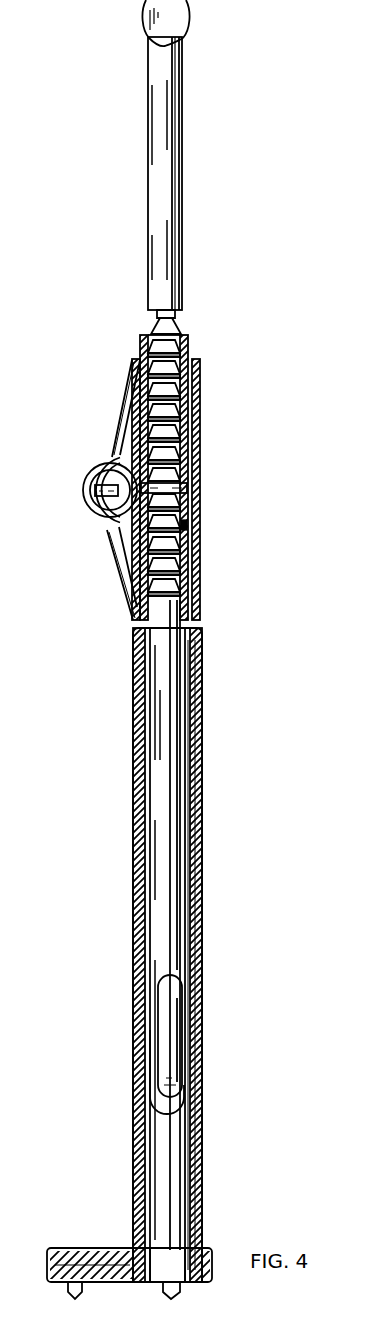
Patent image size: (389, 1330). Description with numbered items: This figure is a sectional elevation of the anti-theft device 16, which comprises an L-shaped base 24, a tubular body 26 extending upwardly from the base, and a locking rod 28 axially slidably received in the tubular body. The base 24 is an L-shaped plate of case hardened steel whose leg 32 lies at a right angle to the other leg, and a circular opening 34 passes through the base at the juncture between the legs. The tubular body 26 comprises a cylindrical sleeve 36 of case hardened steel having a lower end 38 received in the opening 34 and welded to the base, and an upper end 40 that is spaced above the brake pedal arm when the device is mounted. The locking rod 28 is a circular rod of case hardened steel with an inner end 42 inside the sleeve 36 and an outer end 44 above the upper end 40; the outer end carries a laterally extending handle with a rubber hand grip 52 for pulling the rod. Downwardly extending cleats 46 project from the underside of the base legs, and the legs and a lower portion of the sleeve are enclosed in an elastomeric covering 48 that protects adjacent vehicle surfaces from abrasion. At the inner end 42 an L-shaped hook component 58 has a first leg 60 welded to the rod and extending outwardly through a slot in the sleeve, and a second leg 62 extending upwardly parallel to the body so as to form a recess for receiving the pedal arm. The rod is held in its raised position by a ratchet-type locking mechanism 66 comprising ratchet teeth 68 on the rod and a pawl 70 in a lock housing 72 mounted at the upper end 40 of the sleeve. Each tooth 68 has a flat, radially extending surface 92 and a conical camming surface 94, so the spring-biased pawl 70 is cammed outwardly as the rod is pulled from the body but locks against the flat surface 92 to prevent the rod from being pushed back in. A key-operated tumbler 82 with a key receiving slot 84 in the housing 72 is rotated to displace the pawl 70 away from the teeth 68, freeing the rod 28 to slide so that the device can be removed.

The anti-theft device 16 is at (270, 478).
The L-shaped base 24 is at (116, 1246).
The tubular body 26 is at (204, 670).
The locking rod 28 is at (186, 230).
The leg 32 is at (88, 1262).
The circular opening 34 is at (154, 1262).
The cylindrical sleeve 36 is at (198, 797).
The lower end 38 is at (190, 1248).
The upper end 40 is at (192, 345).
The inner end 42 is at (156, 967).
The outer end 44 is at (176, 84).
The cleats 46 is at (164, 1293).
The covering 48 is at (196, 718).
The hand grip 52 is at (186, 22).
The L-shaped hook component 58 is at (180, 1003).
The first leg 60 is at (192, 1082).
The second leg 62 is at (168, 1035).
The ratchet-type locking mechanism 66 is at (108, 386).
The ratchet teeth 68 is at (184, 323).
The pawl 70 is at (116, 540).
The lock housing 72 is at (112, 433).
The lock cylinder or tumbler 82 is at (92, 467).
The key receiving slot 84 is at (92, 506).
The flat, radially extending surface 92 is at (187, 527).
The conical camming surface 94 is at (188, 494).